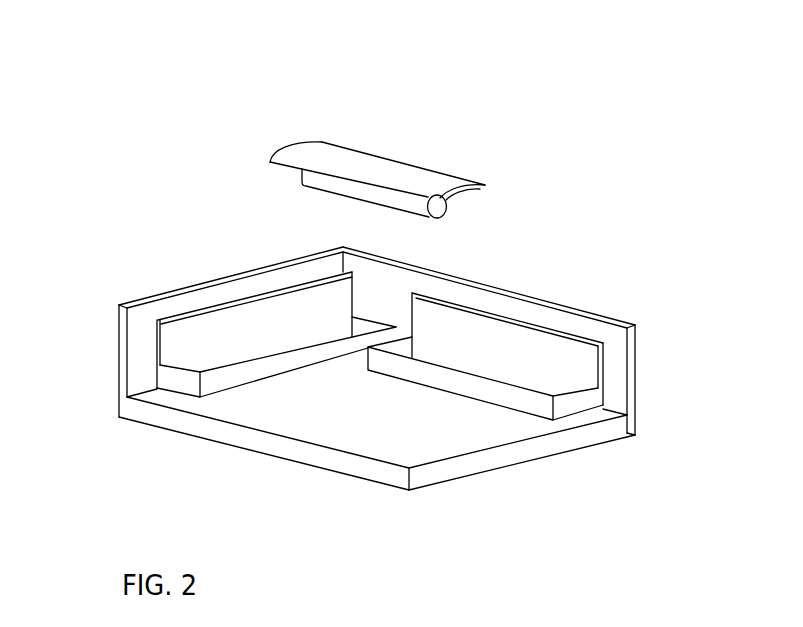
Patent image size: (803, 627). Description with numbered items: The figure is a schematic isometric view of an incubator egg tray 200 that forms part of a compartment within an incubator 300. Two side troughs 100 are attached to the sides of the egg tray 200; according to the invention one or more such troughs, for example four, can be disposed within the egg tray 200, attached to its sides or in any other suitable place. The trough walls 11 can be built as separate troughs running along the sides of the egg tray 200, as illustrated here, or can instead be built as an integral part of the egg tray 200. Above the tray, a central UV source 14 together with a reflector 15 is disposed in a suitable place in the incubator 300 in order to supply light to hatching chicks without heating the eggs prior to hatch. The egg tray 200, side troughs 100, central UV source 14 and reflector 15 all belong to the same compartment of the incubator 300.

The incubator 300 is at (203, 110).
The incubator egg tray 200 is at (322, 428).
The side trough 100 is at (271, 350).
The trough walls 11 is at (236, 382).
The reflector 15 is at (365, 160).
The central UV source 14 is at (427, 218).